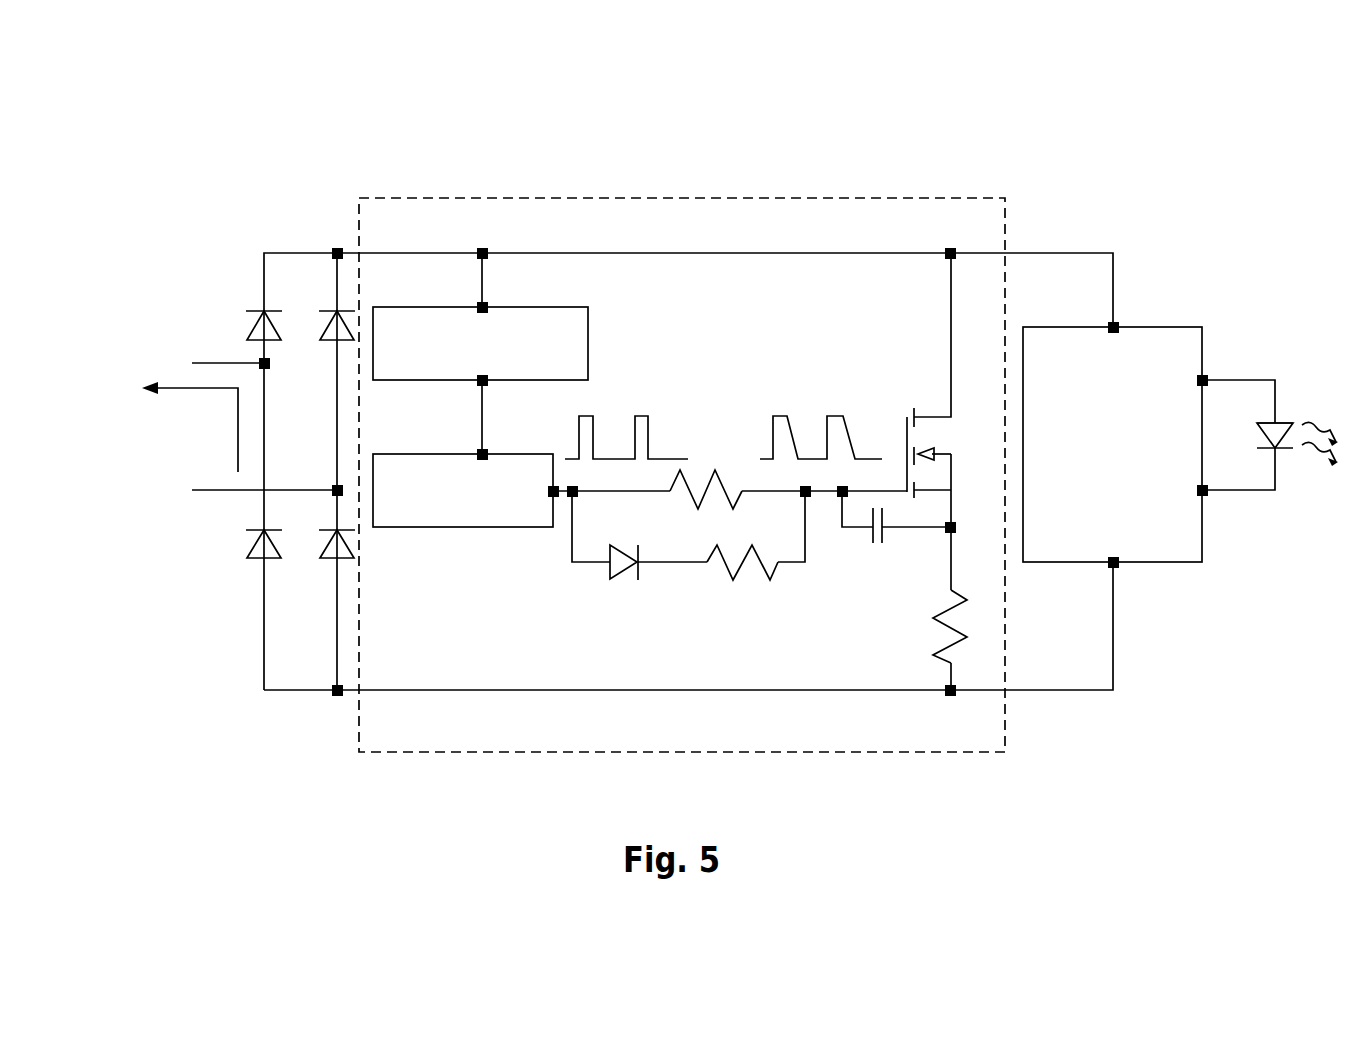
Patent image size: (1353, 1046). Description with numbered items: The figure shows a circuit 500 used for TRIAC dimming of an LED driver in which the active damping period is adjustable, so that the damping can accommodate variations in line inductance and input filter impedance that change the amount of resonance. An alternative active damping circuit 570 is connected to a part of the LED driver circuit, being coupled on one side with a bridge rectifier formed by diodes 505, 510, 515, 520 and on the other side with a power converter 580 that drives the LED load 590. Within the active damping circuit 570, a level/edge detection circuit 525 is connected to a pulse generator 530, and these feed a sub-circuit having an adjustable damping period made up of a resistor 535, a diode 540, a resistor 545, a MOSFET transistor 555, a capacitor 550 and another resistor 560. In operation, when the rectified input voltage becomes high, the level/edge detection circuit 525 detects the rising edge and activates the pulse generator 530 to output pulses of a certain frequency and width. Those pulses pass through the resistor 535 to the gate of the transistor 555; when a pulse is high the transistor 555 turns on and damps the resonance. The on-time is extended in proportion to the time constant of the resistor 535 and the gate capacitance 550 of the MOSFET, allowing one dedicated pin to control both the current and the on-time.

The circuit 500 is at (265, 155).
The bridge rectifier diode 505 is at (245, 306).
The bridge rectifier diode 510 is at (255, 561).
The bridge rectifier diode 515 is at (322, 306).
The bridge rectifier diode 520 is at (327, 562).
The level/edge detection circuit 525 is at (438, 305).
The pulse generator 530 is at (470, 533).
The resistor 535 is at (722, 434).
The diode 540 is at (608, 585).
The resistor 545 is at (723, 585).
The capacitor 550 is at (868, 573).
The transistor 555 is at (893, 412).
The resistor 560 is at (938, 632).
The active damping circuit 570 is at (895, 196).
The power converter 580 is at (1135, 327).
The LED load 590 is at (1278, 413).